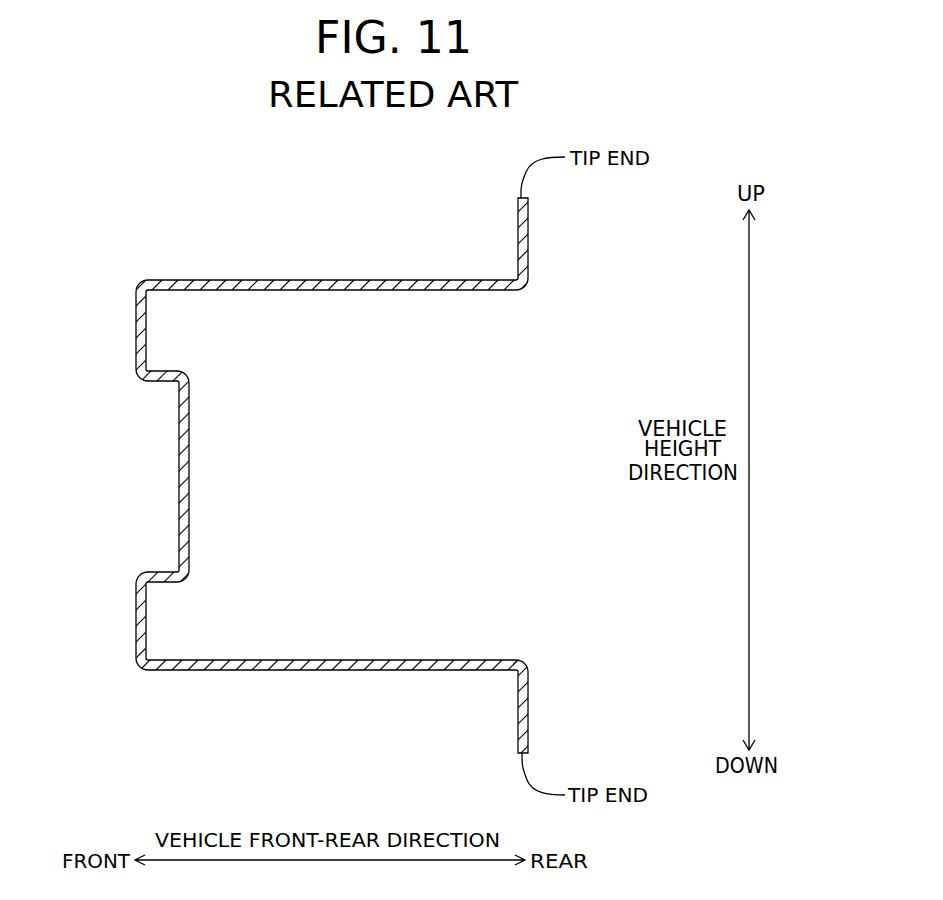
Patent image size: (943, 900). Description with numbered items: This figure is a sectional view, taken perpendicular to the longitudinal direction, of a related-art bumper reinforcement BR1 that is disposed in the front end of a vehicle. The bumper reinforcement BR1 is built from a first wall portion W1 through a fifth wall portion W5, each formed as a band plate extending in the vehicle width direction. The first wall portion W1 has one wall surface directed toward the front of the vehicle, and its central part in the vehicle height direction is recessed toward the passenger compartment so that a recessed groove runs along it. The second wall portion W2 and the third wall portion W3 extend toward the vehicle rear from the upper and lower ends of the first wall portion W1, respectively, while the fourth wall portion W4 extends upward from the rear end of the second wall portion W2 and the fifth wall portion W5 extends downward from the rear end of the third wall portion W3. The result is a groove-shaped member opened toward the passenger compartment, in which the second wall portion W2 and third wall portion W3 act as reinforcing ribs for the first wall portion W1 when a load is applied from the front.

The bumper reinforcement BR1 is at (471, 446).
The first wall portion W1 is at (136, 326).
The second wall portion W2 is at (346, 280).
The third wall portion W3 is at (330, 670).
The fourth wall portion W4 is at (528, 228).
The fifth wall portion W5 is at (528, 714).